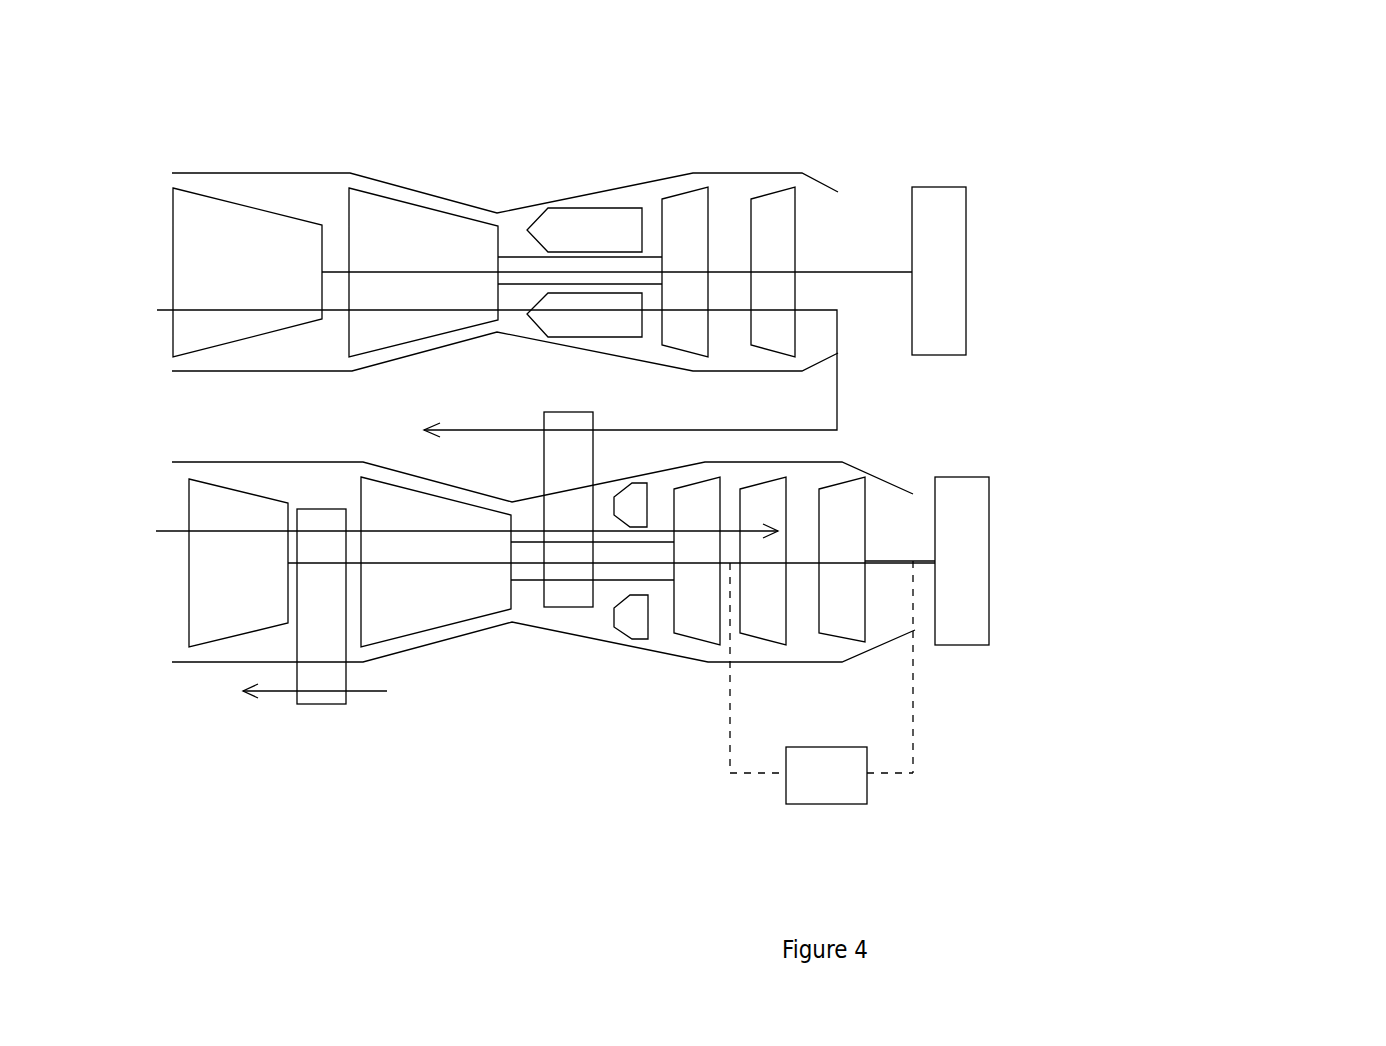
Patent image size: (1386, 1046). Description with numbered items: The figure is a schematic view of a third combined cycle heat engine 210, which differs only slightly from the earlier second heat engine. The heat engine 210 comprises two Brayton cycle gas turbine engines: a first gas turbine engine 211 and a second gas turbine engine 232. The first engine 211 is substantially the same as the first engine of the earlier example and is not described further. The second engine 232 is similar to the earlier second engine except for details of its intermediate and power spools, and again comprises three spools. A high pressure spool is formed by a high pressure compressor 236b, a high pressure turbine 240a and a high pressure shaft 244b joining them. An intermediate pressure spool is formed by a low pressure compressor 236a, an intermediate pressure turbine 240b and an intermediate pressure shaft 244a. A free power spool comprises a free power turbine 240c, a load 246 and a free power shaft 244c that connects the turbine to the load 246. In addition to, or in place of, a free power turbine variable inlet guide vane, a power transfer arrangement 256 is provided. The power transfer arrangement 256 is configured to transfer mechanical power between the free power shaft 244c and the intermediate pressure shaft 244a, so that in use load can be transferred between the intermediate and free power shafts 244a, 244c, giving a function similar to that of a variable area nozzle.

The third combined cycle heat engine 210 is at (1170, 395).
The first gas turbine engine 211 is at (831, 130).
The second gas turbine engine 232 is at (583, 705).
The low pressure compressor 236a is at (227, 638).
The high pressure compressor 236b is at (437, 627).
The high pressure turbine 240a is at (720, 600).
The intermediate pressure turbine 240b is at (787, 630).
The free power turbine 240c is at (858, 643).
The intermediate pressure shaft 244a is at (522, 563).
The high pressure shaft 244b is at (663, 582).
The free power shaft 244c is at (898, 561).
The load 246 is at (989, 592).
The power transfer arrangement 256 is at (858, 801).